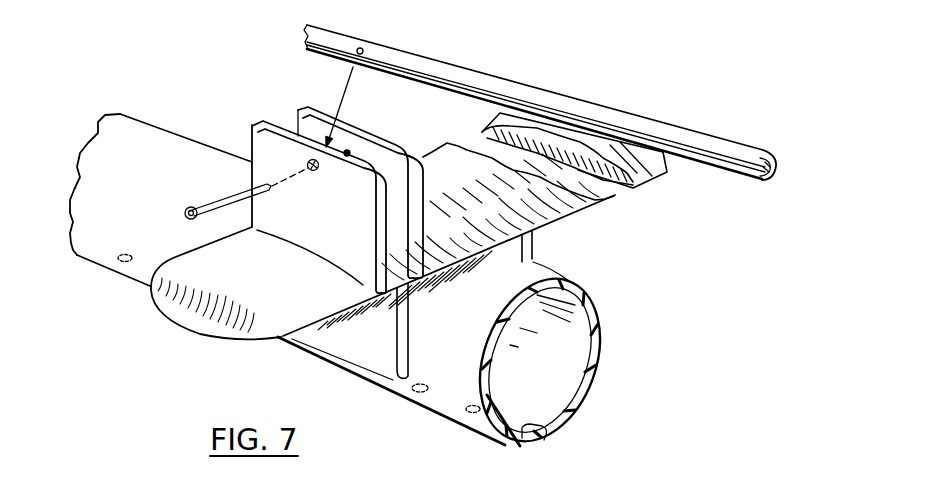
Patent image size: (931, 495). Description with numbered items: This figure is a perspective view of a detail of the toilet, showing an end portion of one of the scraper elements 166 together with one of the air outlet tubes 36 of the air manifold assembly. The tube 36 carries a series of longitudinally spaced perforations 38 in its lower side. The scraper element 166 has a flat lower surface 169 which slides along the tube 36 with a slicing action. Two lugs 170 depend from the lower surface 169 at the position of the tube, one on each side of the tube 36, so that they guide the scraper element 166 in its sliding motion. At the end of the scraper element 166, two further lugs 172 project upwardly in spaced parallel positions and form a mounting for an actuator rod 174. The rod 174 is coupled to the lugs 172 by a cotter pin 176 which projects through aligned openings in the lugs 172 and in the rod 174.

The air outlet tube 36 is at (140, 268).
The perforations 38 is at (490, 440).
The scraper element 166 is at (462, 160).
The flat lower surface 169 is at (610, 197).
The lugs 170 is at (533, 250).
The lugs 172 is at (257, 101).
The actuator rod 174 is at (472, 70).
The cotter pin 176 is at (220, 197).